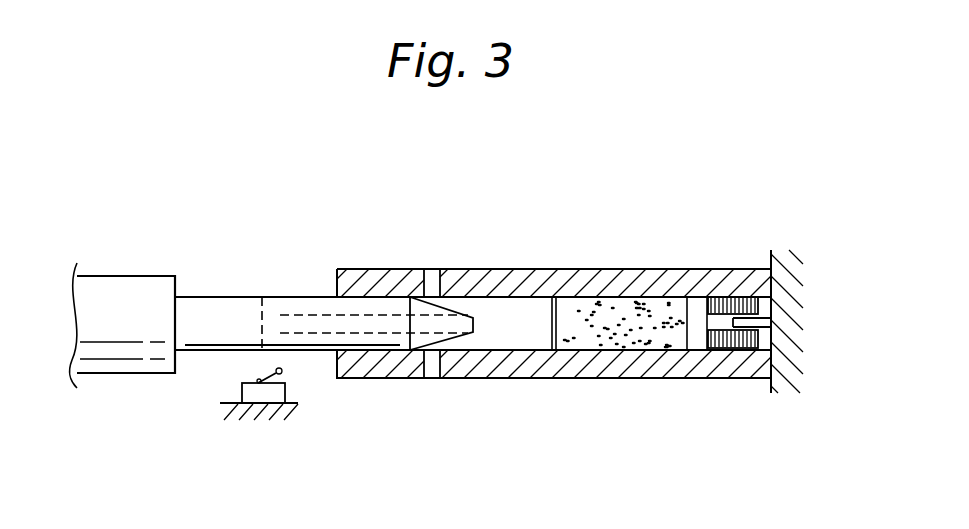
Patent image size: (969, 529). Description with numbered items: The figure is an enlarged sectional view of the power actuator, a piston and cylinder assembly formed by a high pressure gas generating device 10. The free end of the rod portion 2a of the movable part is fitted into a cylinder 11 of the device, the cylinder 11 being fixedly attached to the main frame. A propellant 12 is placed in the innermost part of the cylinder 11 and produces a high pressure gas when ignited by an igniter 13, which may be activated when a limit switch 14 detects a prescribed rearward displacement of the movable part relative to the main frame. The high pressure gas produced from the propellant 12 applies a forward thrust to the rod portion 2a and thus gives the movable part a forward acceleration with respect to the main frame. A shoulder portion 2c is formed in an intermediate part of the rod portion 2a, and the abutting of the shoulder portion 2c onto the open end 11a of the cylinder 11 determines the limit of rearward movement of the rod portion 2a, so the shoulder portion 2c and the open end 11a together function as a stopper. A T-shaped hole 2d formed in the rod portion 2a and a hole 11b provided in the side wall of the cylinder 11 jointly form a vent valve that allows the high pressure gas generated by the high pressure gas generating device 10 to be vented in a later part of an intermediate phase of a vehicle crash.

The rod portion 2a is at (125, 381).
The shoulder portion 2c is at (177, 289).
The T-shaped hole 2d is at (293, 316).
The high pressure gas generating device 10 is at (543, 218).
The cylinder 11 is at (490, 275).
The open end 11a is at (337, 378).
The hole 11b is at (432, 378).
The propellant 12 is at (622, 315).
The igniter 13 is at (726, 297).
The limit switch 14 is at (265, 396).